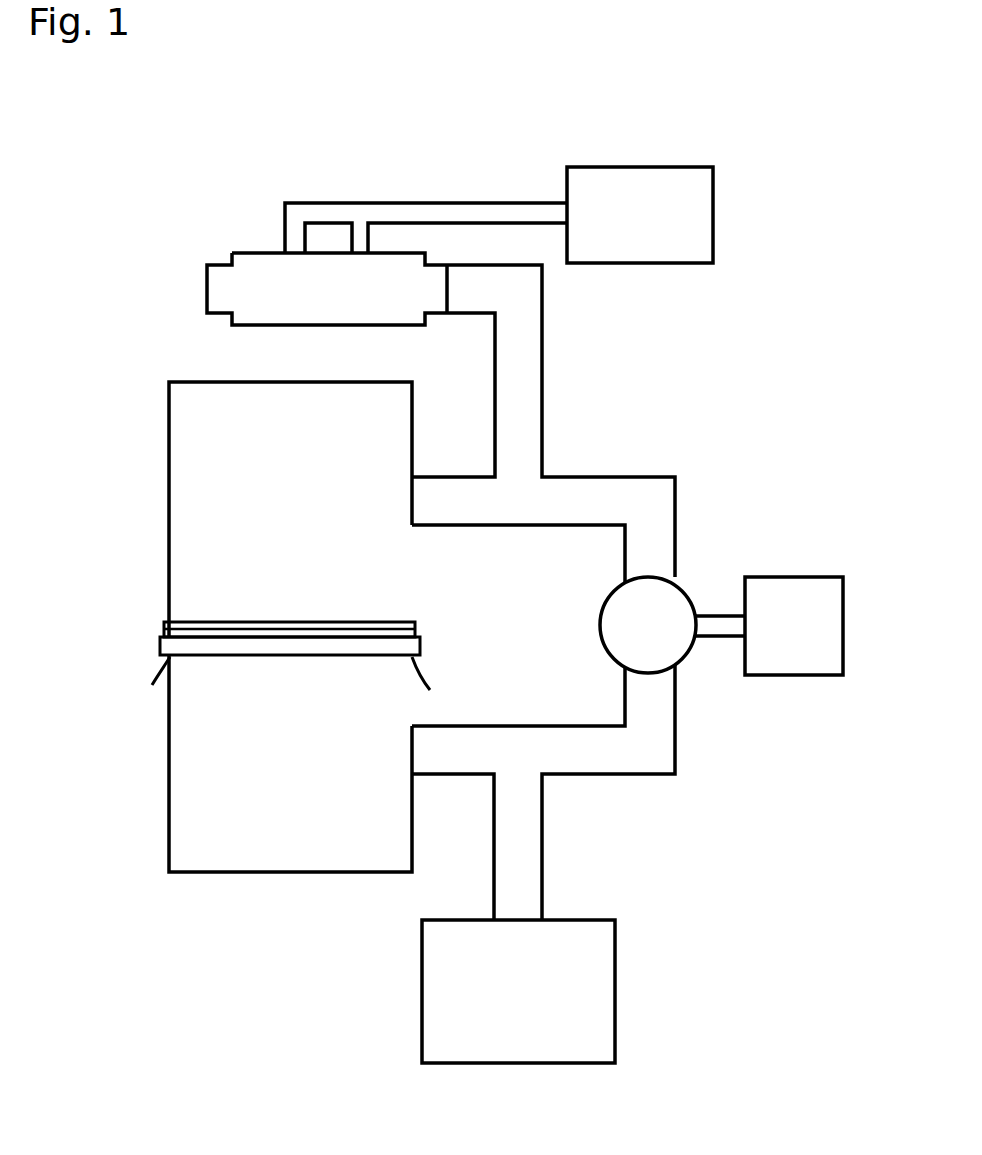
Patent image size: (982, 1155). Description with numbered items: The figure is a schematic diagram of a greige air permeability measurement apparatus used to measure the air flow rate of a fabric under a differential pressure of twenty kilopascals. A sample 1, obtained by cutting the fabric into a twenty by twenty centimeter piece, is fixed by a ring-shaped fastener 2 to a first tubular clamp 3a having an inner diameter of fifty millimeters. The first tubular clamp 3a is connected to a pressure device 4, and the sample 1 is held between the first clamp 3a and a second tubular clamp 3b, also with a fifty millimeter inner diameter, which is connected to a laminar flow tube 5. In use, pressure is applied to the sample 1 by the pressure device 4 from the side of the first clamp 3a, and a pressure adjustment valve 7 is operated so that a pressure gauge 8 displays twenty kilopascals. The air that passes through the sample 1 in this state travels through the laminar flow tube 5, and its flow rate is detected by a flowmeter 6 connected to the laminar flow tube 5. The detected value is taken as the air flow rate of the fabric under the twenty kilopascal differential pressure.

The sample 1 is at (140, 680).
The ring-shaped fastener 2 is at (150, 645).
The first tubular clamp 3a is at (268, 752).
The second tubular clamp 3b is at (262, 515).
The pressure device 4 is at (492, 995).
The laminar flow tube 5 is at (305, 295).
The flowmeter 6 is at (638, 218).
The pressure adjustment valve 7 is at (652, 640).
The pressure gauge 8 is at (795, 630).